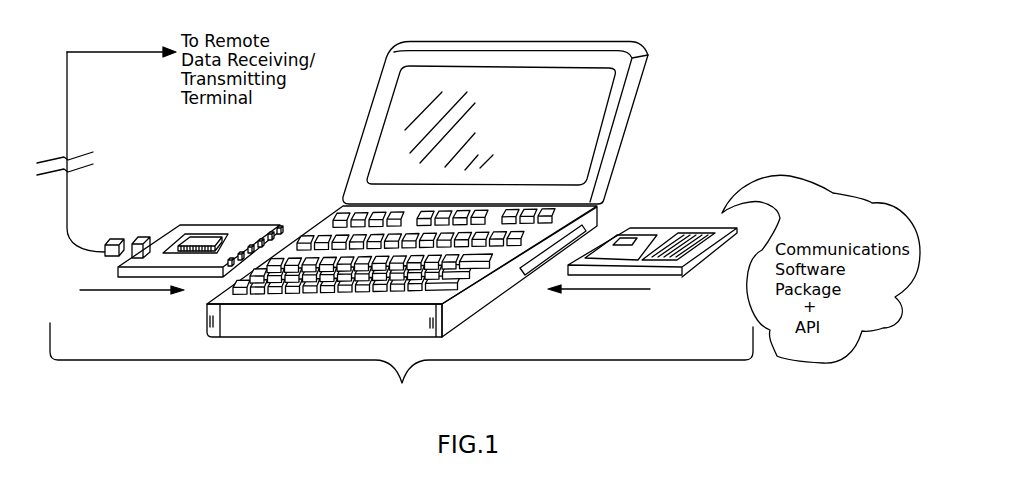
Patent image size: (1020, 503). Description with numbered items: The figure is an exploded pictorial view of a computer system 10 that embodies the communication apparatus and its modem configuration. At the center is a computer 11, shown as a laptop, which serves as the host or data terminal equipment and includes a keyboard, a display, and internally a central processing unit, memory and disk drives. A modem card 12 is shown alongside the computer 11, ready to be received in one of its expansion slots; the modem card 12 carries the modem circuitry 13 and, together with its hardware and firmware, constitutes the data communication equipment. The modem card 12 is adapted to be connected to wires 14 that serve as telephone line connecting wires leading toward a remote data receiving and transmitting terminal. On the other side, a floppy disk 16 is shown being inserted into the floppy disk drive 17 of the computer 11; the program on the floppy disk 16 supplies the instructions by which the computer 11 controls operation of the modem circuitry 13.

The computer system 10 is at (482, 180).
The computer 11 is at (618, 153).
The modem card 12 is at (200, 232).
The modem circuitry 13 is at (213, 236).
The wires 14 is at (72, 232).
The floppy disk 16 is at (657, 226).
The floppy disk drive 17 is at (519, 288).